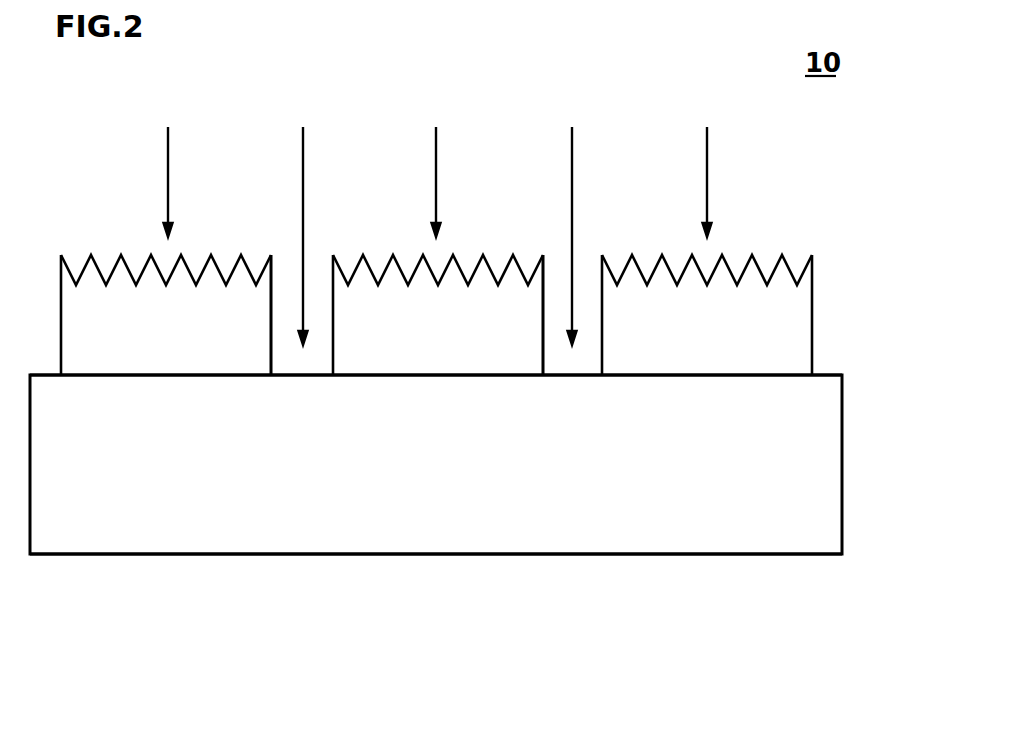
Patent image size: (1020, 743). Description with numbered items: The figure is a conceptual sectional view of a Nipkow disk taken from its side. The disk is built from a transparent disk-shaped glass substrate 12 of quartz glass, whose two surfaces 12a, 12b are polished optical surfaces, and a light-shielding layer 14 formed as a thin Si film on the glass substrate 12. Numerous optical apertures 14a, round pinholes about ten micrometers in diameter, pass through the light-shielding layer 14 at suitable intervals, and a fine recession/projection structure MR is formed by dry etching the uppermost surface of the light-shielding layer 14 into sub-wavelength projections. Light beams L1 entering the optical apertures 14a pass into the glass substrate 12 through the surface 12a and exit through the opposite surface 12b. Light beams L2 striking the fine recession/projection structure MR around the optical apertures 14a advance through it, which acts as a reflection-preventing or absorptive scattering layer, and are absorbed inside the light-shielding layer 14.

The glass substrate 12 is at (825, 458).
The surface 12a is at (827, 373).
The surface 12b is at (817, 556).
The light-shielding layer 14 is at (471, 279).
The optical apertures 14a is at (275, 297).
The fine recession/projection structure MR is at (137, 268).
The light beams L1 is at (303, 160).
The light beams L2 is at (168, 160).